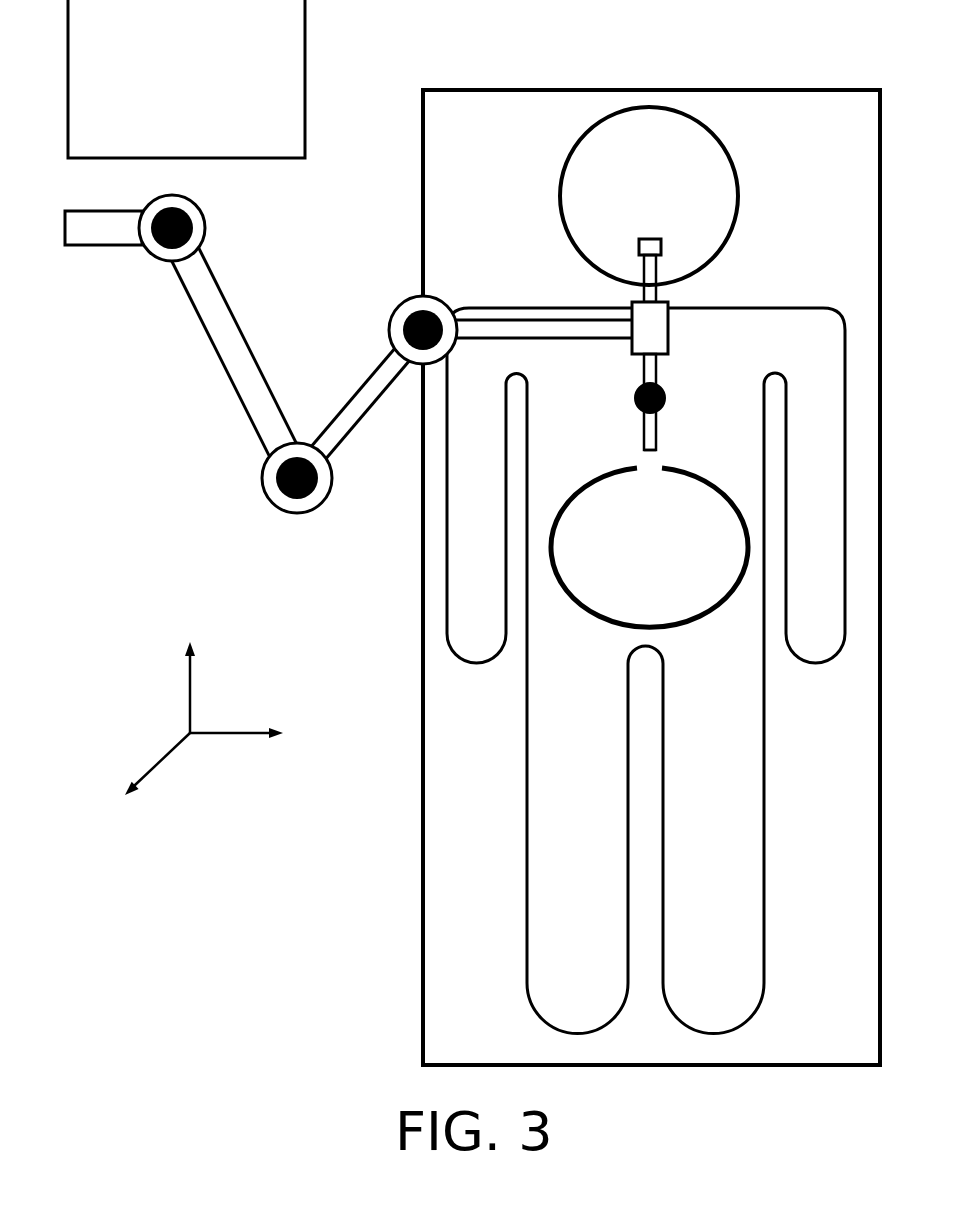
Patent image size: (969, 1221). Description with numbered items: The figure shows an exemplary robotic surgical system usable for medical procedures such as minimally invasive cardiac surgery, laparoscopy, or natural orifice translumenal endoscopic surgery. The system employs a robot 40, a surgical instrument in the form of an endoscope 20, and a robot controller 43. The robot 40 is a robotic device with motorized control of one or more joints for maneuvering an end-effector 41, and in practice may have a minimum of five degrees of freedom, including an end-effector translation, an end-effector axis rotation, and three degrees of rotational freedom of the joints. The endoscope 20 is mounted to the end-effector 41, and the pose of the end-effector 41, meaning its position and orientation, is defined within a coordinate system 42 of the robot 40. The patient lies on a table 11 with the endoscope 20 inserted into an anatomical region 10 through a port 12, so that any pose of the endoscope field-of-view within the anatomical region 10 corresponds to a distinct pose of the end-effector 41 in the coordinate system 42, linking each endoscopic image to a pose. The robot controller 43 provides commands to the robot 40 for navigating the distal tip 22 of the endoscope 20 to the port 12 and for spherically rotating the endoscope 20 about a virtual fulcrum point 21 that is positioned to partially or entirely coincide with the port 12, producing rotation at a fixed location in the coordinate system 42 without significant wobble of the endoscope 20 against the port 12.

The anatomical region 10 is at (664, 590).
The patient table 11 is at (536, 272).
The port 12 is at (648, 470).
The endoscope 20 is at (626, 388).
The virtual fulcrum point 21 is at (665, 398).
The distal tip 22 is at (657, 448).
The robot 40 is at (167, 360).
The end-effector 41 is at (632, 348).
The coordinate system 42 is at (152, 712).
The robot controller 43 is at (175, 93).